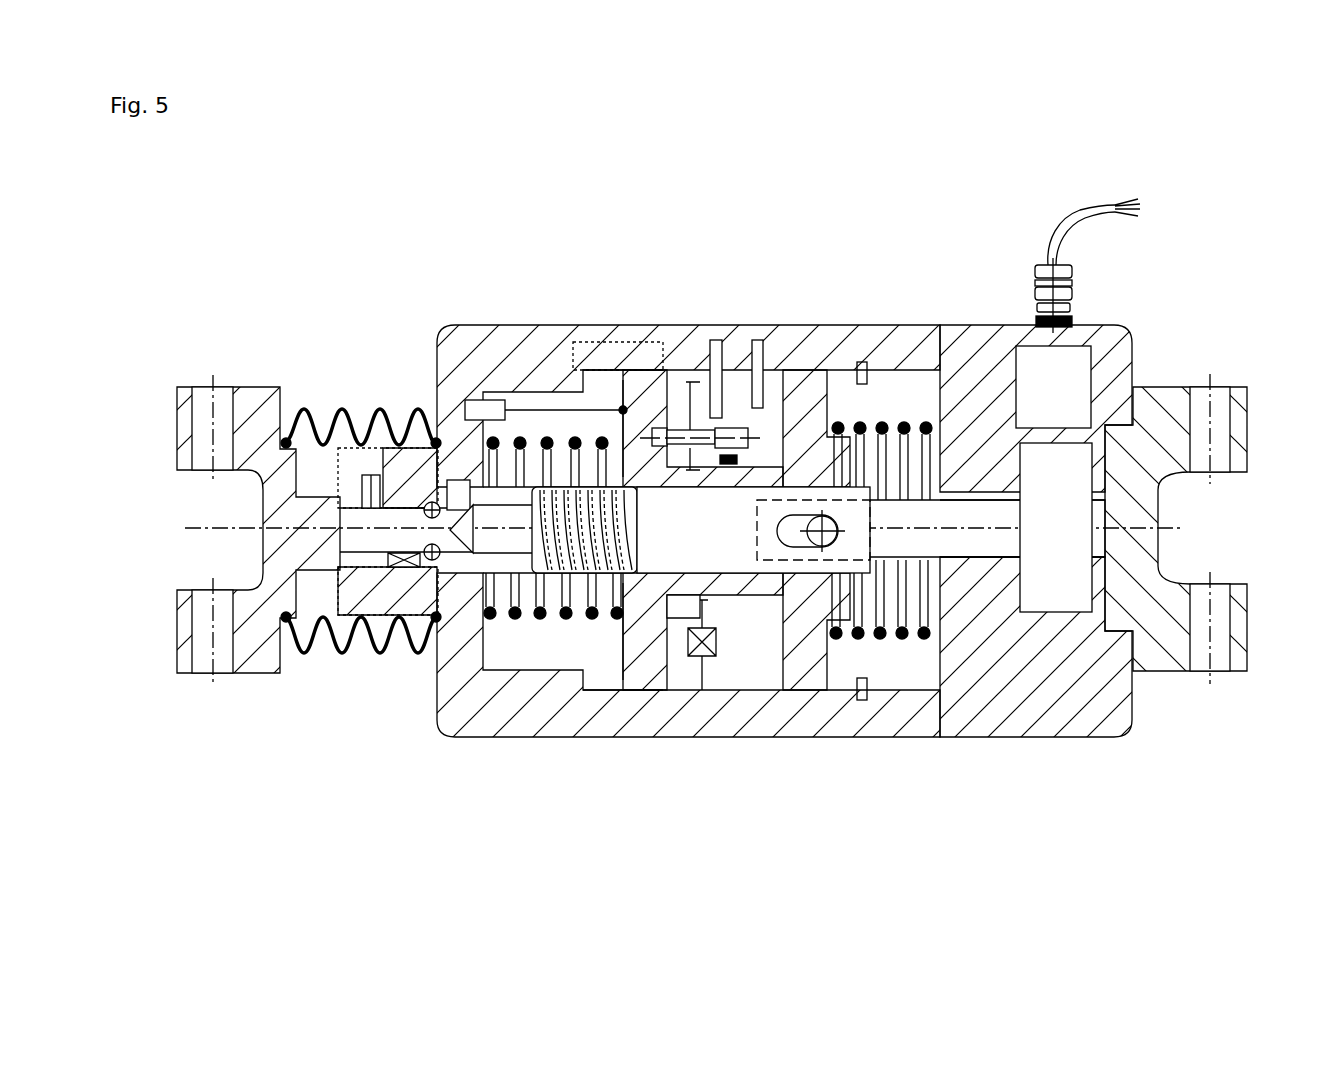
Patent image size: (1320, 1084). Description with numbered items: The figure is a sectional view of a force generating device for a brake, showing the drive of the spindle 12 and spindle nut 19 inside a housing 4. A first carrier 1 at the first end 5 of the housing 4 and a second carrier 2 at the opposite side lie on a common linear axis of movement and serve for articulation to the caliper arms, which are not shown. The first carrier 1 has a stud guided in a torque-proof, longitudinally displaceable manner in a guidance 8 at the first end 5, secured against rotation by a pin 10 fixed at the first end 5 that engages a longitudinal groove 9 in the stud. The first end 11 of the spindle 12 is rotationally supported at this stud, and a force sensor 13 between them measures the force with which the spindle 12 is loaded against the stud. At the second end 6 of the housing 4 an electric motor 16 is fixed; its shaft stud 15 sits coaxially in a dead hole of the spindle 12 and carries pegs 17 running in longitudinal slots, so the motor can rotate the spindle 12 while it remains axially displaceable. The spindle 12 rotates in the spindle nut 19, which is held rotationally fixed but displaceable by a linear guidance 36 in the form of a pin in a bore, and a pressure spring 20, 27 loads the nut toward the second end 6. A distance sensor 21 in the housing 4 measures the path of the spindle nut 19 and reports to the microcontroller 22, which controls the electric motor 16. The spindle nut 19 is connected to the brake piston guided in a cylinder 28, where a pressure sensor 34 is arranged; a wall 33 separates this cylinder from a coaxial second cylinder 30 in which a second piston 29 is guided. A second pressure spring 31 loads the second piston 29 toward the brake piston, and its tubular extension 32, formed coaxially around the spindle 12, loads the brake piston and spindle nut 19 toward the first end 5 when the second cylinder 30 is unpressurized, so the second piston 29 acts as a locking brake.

The first carrier 1 is at (256, 610).
The second carrier 2 is at (1148, 572).
The housing 4 is at (470, 682).
The first end of the housing 5 is at (362, 352).
The second end of the housing 6 is at (1107, 270).
The guidance 8 is at (366, 570).
The longitudinal groove 9 is at (344, 496).
The pin 10 is at (367, 478).
The first end of the spindle 11 is at (430, 567).
The spindle 12 is at (579, 496).
The force sensor 13 is at (398, 492).
The shaft stud 15 is at (969, 549).
The electric motor 16 is at (1051, 496).
The pegs 17 is at (829, 549).
The spindle nut 19 is at (647, 682).
The pressure spring 20 is at (537, 630).
The distance sensor 21 is at (478, 402).
The microcontroller 22 is at (1078, 376).
The spring 27 is at (553, 530).
The cylinder 28 is at (700, 600).
The second piston 29 is at (801, 423).
The second cylinder 30 is at (779, 430).
The second pressure spring 31 is at (863, 422).
The tubular extension 32 is at (735, 592).
The wall 33 is at (728, 355).
The pressure sensor 34 is at (690, 664).
The linear guidance 36 is at (681, 432).